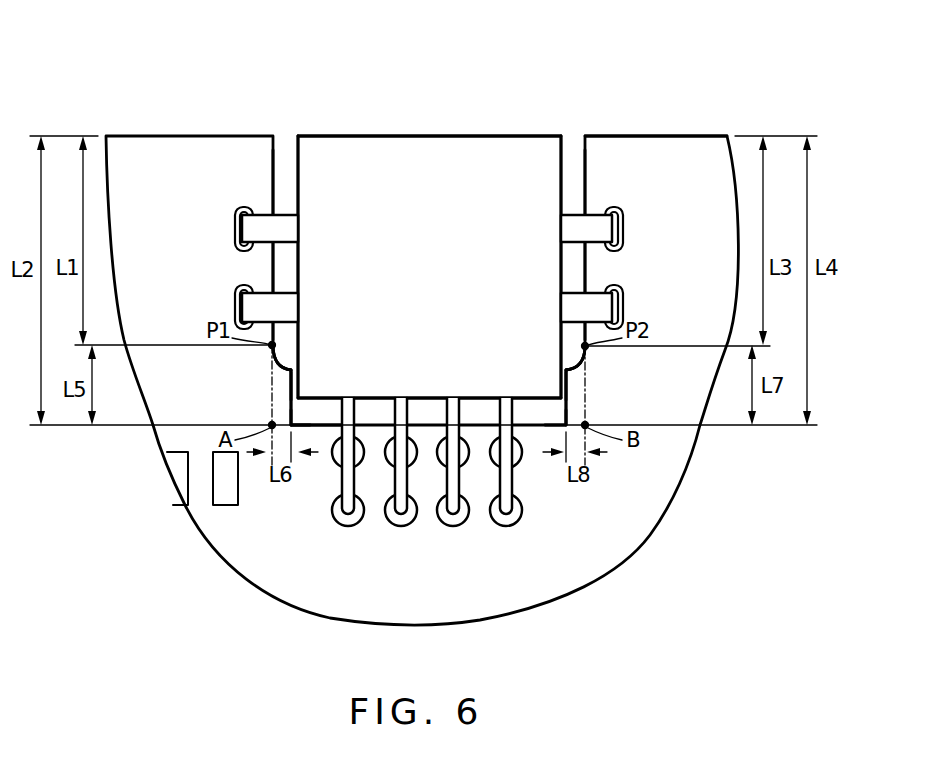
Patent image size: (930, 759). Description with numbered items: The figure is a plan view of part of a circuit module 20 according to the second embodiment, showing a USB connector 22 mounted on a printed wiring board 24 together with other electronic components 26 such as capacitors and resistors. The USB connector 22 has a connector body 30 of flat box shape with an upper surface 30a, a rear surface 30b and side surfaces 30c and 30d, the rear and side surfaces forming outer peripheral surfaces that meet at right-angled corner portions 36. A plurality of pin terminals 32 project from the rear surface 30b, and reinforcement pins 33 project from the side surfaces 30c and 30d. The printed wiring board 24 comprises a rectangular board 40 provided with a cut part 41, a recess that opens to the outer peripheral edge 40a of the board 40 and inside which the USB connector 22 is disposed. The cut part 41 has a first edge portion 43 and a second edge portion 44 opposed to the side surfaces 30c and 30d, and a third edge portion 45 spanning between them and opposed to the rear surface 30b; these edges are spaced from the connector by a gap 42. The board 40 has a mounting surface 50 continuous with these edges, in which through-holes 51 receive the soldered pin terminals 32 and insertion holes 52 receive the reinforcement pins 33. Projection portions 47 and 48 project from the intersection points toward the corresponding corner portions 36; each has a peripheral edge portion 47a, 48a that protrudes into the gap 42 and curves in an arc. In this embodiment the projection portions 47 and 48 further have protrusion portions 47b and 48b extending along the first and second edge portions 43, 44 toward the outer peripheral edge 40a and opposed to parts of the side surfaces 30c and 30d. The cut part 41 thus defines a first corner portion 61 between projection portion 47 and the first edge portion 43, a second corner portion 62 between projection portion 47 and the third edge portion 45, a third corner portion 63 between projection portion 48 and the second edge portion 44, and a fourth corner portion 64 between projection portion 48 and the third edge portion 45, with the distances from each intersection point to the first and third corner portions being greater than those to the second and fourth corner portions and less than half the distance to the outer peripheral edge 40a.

The circuit module 20 is at (123, 72).
The USB connector 22 is at (485, 128).
The printed wiring board 24 is at (422, 352).
The other electronic components 26 is at (180, 498).
The connector body 30 is at (450, 136).
The upper surface 30a is at (405, 145).
The rear surface 30b is at (525, 428).
The side surface 30c is at (291, 143).
The side surface 30d is at (575, 162).
The pin terminals 32 is at (401, 518).
The reinforcement pins 33 is at (290, 230).
The corner portions 36 is at (292, 152).
The board 40 is at (546, 592).
The outer peripheral edge 40a is at (688, 100).
The cut part 41 is at (588, 138).
The gap 42 is at (272, 143).
The first edge portion 43 is at (272, 202).
The second edge portion 44 is at (590, 202).
The third edge portion 45 is at (342, 425).
The projection portion 47 is at (287, 406).
The peripheral edge portion 47a is at (293, 368).
The protrusion portion 47b is at (282, 357).
The projection portion 48 is at (570, 406).
The peripheral edge portion 48a is at (565, 368).
The protrusion portion 48b is at (578, 357).
The mounting surface 50 is at (530, 522).
The through-holes 51 is at (506, 518).
The insertion holes 52 is at (236, 228).
The first corner portion 61 is at (285, 350).
The second corner portion 62 is at (298, 420).
The third corner portion 63 is at (575, 352).
The fourth corner portion 64 is at (562, 420).